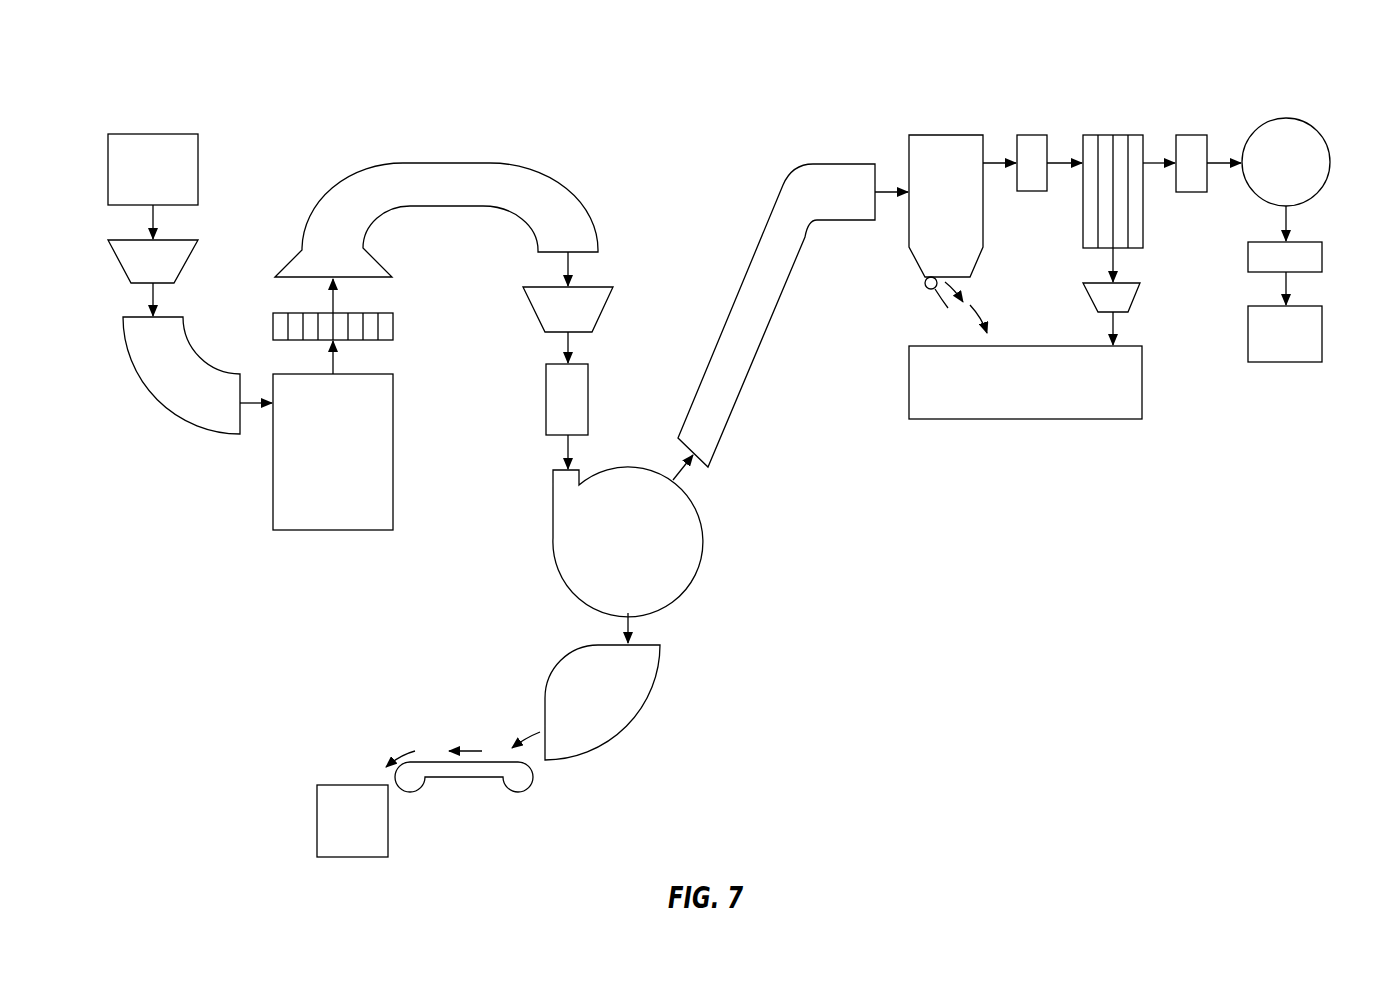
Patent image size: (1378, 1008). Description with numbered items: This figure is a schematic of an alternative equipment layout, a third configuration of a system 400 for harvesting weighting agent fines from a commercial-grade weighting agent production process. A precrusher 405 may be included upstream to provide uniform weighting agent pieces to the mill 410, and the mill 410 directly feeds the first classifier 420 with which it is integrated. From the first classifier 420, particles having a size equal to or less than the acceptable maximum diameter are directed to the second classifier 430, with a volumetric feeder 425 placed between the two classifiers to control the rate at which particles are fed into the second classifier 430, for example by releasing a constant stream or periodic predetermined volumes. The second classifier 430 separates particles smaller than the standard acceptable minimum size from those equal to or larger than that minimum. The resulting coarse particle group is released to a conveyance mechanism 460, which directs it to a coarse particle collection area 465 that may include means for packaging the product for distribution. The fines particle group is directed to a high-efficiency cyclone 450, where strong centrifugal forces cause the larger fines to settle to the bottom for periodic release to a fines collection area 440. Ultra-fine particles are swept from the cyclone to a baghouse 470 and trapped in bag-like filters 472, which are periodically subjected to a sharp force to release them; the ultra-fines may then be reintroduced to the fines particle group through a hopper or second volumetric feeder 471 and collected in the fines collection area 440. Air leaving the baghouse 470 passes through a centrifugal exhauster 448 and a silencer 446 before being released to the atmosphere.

The system 400 is at (165, 62).
The precrusher 405 is at (152, 134).
The mill 410 is at (273, 482).
The first classifier 420 is at (273, 325).
The volumetric feeder 425 is at (531, 306).
The second classifier 430 is at (554, 525).
The fines collection area 440 is at (1142, 382).
The silencer 446 is at (1285, 118).
The centrifugal exhauster 448 is at (1285, 362).
The high-efficiency cyclone 450 is at (947, 133).
The conveyance mechanism 460 is at (463, 779).
The coarse particle collection area 465 is at (317, 822).
The baghouse 470 is at (1090, 133).
The second volumetric feeder 471 is at (1140, 296).
The bag-like filters 472 is at (1113, 160).